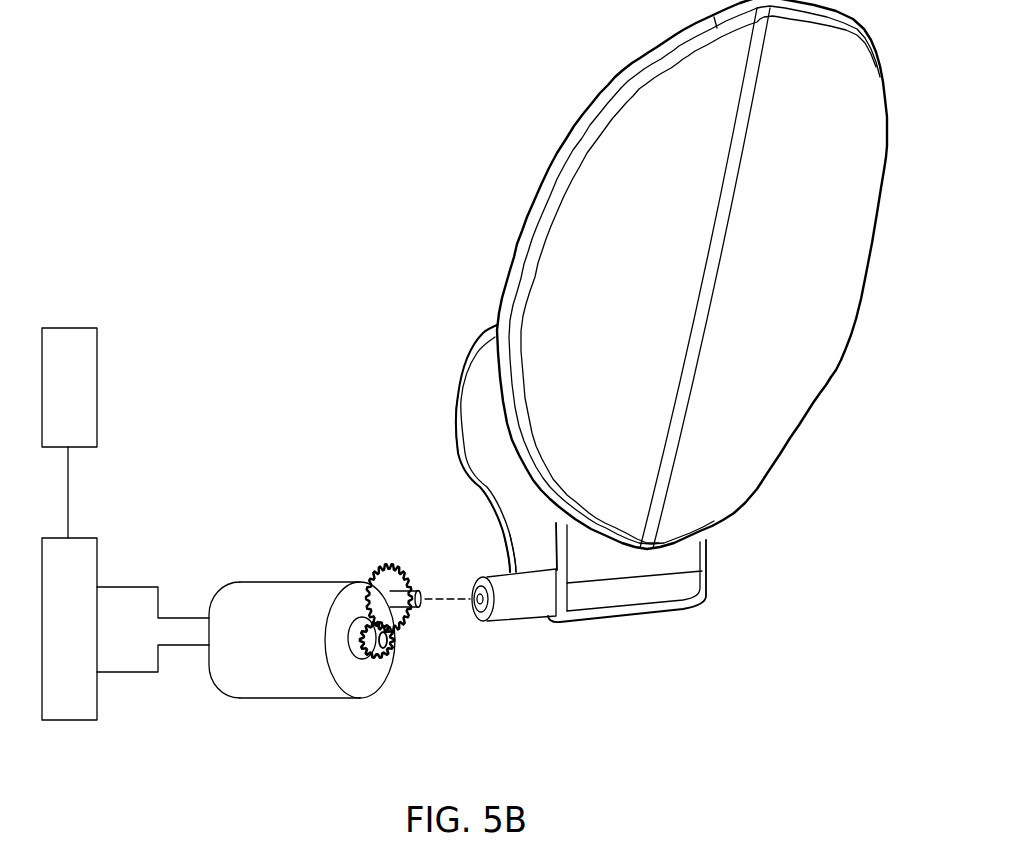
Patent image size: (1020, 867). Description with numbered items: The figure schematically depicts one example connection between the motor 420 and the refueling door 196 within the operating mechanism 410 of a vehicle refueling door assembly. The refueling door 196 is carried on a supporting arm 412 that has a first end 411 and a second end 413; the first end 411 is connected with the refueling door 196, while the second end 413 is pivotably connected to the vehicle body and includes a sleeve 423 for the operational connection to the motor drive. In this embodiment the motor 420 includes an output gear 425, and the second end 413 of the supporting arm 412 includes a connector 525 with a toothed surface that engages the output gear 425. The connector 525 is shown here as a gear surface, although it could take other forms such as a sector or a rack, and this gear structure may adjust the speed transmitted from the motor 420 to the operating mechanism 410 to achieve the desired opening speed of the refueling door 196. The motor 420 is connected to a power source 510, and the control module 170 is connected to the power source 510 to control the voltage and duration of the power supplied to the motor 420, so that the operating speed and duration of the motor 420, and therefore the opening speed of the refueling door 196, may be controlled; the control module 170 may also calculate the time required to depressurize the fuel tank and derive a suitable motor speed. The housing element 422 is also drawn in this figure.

The control module 170 is at (50, 396).
The power source 510 is at (50, 638).
The motor 420 is at (285, 678).
The output gear 425 is at (393, 646).
The connector 525 is at (402, 565).
The sleeve 423 is at (512, 603).
The housing 422 is at (732, 583).
The second end 413 is at (506, 569).
The supporting arm 412 is at (451, 424).
The first end 411 is at (483, 333).
The operating mechanism 410 is at (780, 539).
The refueling door 196 is at (793, 392).